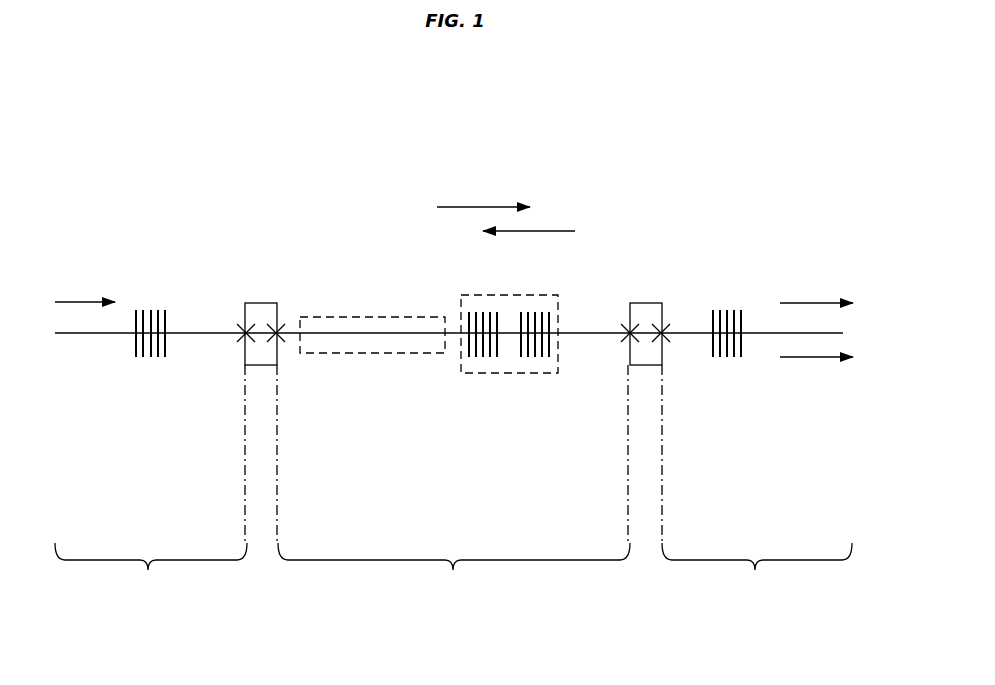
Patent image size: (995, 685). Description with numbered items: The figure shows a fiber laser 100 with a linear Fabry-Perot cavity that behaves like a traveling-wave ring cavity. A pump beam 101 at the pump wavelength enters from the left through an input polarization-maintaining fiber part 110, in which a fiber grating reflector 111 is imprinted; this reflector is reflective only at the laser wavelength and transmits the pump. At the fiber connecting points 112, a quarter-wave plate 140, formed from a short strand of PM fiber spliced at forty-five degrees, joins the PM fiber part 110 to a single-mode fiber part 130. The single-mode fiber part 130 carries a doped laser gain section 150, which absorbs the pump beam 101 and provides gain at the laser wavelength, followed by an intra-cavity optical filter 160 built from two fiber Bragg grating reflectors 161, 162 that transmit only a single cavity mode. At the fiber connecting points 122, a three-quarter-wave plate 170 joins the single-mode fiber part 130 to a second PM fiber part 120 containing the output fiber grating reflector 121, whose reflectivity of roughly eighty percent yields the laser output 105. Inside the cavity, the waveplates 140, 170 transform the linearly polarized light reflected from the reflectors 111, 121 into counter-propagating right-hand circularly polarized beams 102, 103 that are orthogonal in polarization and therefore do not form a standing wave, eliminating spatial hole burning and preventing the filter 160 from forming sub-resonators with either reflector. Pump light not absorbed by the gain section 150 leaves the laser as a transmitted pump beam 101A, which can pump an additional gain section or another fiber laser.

The laser 100 is at (337, 118).
The pump beam 101 is at (88, 302).
The transmitted pump beam 101A is at (795, 357).
The right-hand circularly polarized light 102 is at (485, 207).
The right-hand circularly polarized light 103 is at (562, 231).
The laser output 105 is at (815, 303).
The input polarization-maintaining fiber part 110 is at (151, 495).
The fiber grating reflector 111 is at (145, 360).
The fiber connecting point 112 is at (240, 326).
The polarization-maintaining fiber part 120 is at (757, 495).
The fiber grating reflector 121 is at (728, 360).
The fiber connecting point 122 is at (624, 326).
The single-mode fiber part 130 is at (453, 495).
The quarter-wave plate 140 is at (262, 366).
The laser gain section 150 is at (356, 317).
The intra-cavity optical filter 160 is at (513, 374).
The fiber Bragg grating reflector 161 is at (468, 362).
The fiber Bragg grating reflector 162 is at (533, 362).
The three-quarter-wave plate 170 is at (638, 366).